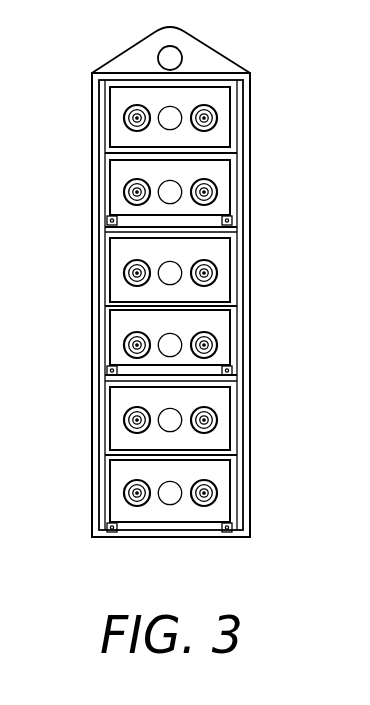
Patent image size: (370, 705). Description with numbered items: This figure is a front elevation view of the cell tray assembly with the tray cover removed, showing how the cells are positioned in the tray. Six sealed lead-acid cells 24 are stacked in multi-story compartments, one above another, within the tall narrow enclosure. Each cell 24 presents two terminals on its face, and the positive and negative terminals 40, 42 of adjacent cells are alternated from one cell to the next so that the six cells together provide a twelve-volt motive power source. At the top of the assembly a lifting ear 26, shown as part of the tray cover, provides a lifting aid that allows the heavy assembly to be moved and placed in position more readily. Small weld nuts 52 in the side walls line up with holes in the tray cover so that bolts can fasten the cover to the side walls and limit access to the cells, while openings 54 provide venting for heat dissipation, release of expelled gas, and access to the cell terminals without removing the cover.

The sealed lead-acid cell 24 is at (218, 95).
The lifting ear 26 is at (213, 60).
The positive terminal 40 is at (123, 118).
The negative terminal 42 is at (218, 118).
The weld nut 52 is at (112, 526).
The opening 54 is at (360, 353).